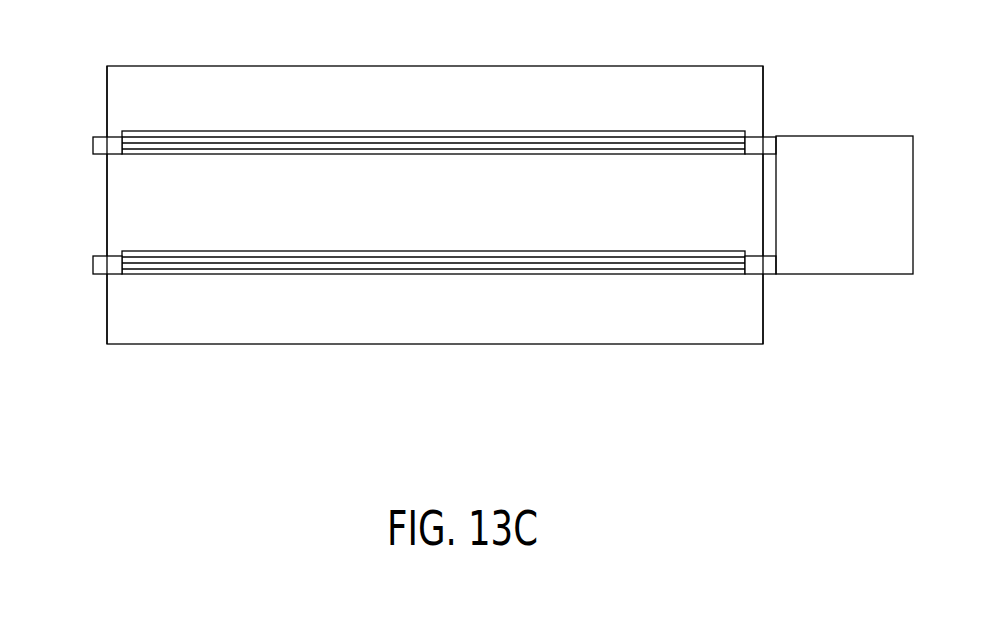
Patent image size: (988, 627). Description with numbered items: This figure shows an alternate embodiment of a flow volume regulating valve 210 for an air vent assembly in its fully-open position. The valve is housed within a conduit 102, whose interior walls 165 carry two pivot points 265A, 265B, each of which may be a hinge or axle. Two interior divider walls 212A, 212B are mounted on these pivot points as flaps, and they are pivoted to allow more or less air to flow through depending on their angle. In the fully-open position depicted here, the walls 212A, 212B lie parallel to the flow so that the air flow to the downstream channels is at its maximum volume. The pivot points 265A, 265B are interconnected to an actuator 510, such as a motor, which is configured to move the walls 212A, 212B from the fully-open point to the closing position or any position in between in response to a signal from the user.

The conduit 102 is at (193, 66).
The interior wall 165 is at (106, 107).
The flow volume regulating valve 210 is at (207, 368).
The interior divider wall 212A is at (608, 131).
The interior divider wall 212B is at (570, 274).
The pivot point 265A is at (98, 143).
The pivot point 265B is at (98, 262).
The actuator 510 is at (860, 220).